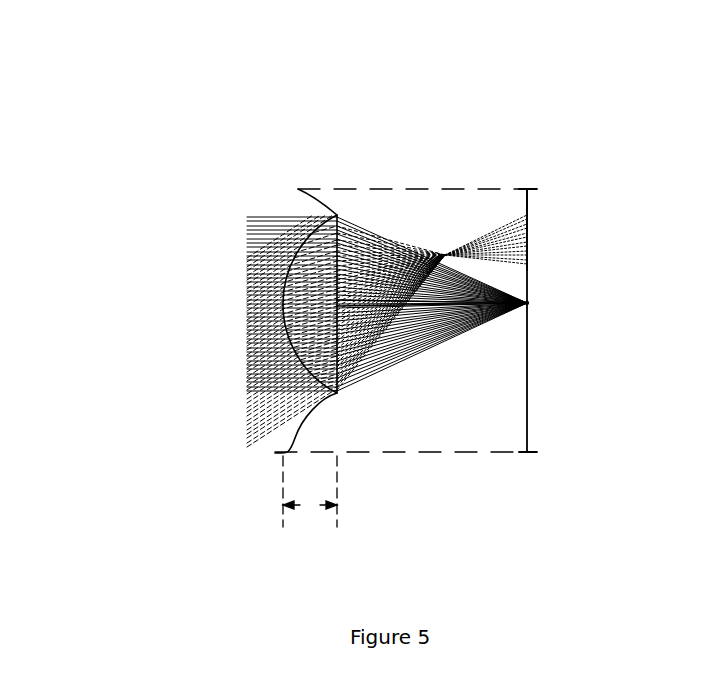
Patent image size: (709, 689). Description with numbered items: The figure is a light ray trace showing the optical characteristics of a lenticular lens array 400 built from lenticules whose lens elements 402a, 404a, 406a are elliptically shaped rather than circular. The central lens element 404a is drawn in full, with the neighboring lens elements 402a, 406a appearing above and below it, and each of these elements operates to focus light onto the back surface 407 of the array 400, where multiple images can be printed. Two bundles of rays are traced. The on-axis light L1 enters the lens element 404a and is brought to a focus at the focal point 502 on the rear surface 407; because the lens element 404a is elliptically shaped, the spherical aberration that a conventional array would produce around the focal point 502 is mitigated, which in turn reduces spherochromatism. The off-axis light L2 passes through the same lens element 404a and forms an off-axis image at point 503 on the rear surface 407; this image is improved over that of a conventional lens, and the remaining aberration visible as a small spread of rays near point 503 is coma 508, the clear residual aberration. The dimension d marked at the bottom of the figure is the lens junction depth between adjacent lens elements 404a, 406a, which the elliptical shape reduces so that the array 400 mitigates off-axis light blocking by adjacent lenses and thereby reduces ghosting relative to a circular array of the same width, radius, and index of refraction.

The lenticular lens array 400 is at (262, 26).
The elliptically-shaped lens element 402a is at (318, 198).
The elliptically-shaped lens element 404a is at (305, 230).
The elliptically-shaped lens element 406a is at (283, 447).
The back surface 407 is at (527, 420).
The focal point 502 is at (527, 303).
The off-axis image point 503 is at (530, 215).
The coma 508 is at (538, 265).
The on-axis light L1 is at (237, 405).
The off-axis light L2 is at (230, 258).
The lens junction depth d is at (310, 491).